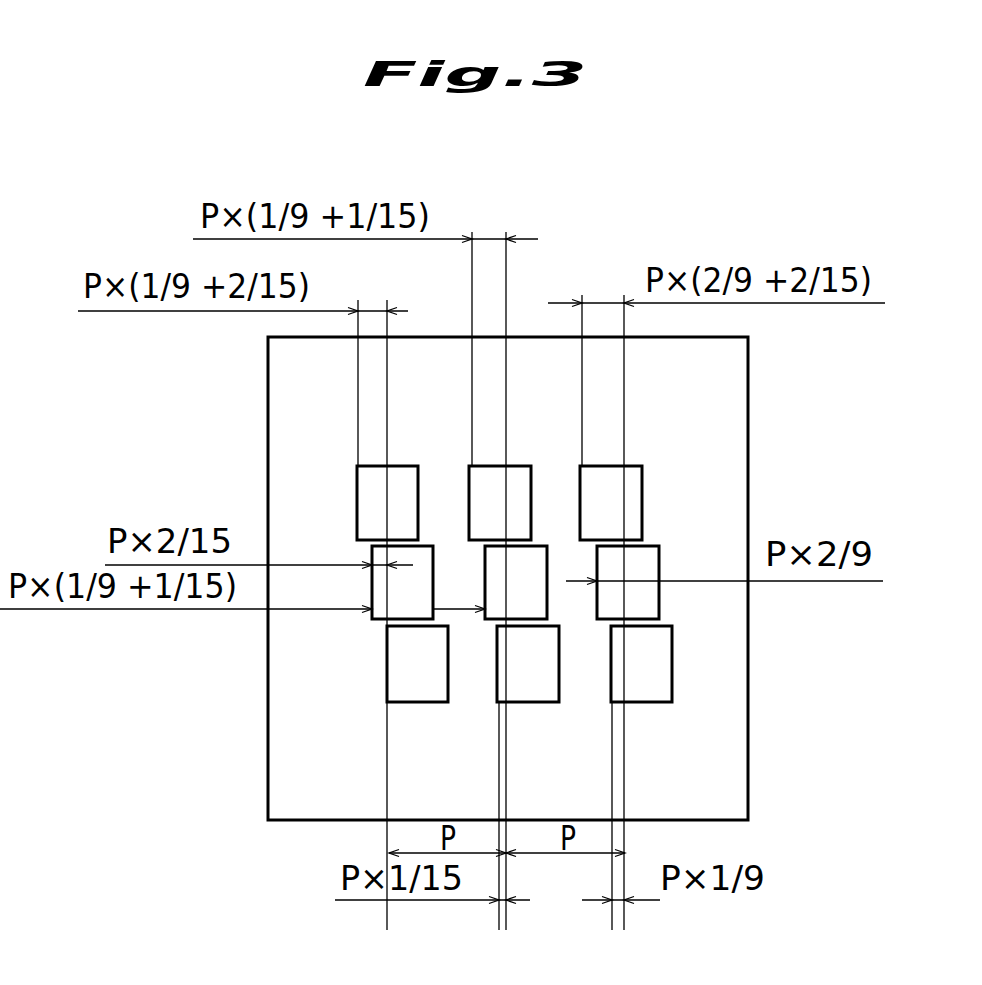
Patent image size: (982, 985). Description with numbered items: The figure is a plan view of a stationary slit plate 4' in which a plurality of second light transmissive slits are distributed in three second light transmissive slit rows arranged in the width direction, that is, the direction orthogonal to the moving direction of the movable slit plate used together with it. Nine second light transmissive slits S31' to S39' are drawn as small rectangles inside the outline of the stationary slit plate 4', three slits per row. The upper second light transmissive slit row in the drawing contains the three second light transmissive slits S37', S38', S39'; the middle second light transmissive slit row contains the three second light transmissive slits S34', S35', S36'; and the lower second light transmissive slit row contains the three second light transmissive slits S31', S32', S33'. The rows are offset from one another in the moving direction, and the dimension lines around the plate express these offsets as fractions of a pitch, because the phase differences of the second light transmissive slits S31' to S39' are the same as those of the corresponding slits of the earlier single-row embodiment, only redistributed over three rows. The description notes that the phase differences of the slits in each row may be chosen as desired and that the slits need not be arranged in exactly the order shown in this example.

The stationary slit plate 4' is at (559, 578).
The second light transmissive slit S31' is at (310, 670).
The second light transmissive slit S32' is at (543, 702).
The second light transmissive slit S33' is at (729, 664).
The second light transmissive slit S34' is at (303, 548).
The second light transmissive slit S35' is at (482, 656).
The second light transmissive slit S36' is at (722, 554).
The second light transmissive slit S37' is at (295, 489).
The second light transmissive slit S38' is at (524, 464).
The second light transmissive slit S39' is at (713, 496).